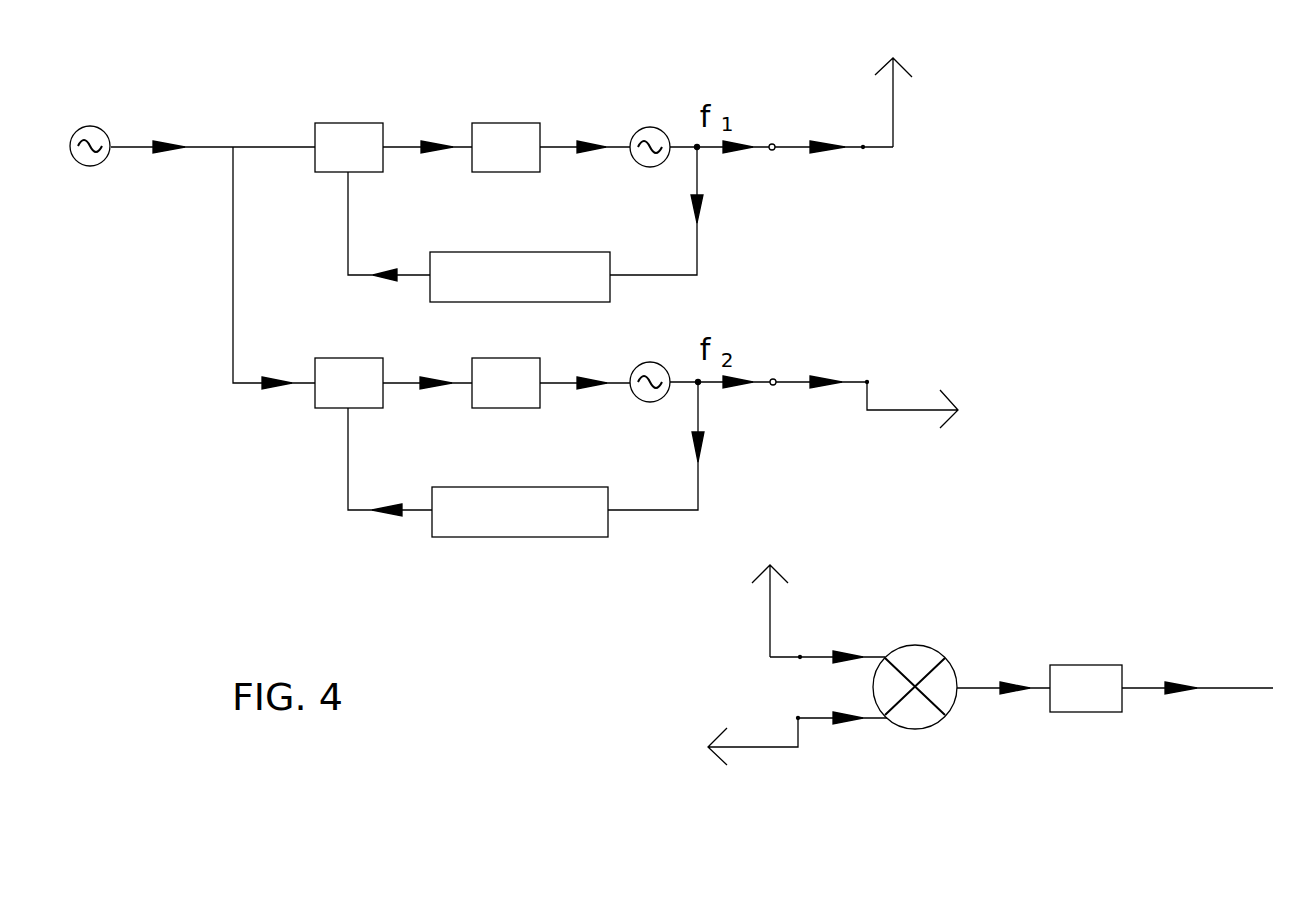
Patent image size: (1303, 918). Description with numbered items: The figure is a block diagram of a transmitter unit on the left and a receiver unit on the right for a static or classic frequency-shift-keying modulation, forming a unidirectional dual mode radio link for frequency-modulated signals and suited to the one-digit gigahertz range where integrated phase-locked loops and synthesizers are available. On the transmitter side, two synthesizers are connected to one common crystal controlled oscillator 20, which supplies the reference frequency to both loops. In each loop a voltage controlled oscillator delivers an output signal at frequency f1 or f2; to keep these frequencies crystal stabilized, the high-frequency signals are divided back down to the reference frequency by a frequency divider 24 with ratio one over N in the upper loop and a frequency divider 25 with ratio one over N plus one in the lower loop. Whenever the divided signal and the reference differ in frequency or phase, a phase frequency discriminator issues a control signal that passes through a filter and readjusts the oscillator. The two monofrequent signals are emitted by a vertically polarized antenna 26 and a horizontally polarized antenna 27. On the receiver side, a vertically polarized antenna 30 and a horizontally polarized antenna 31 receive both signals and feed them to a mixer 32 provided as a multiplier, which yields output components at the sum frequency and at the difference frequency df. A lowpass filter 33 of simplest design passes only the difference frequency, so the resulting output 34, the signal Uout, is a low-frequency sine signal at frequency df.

The crystal controlled oscillator 20 is at (197, 127).
The frequency divider 24 is at (477, 258).
The frequency divider 25 is at (475, 493).
The vertically polarized antenna 26 is at (873, 62).
The horizontally polarized antenna 27 is at (890, 418).
The vertically polarized antenna 30 is at (792, 573).
The horizontally polarized antenna 31 is at (748, 755).
The mixer 32 is at (920, 717).
The lowpass filter 33 is at (1073, 700).
The output signal u_out 34 is at (1210, 695).